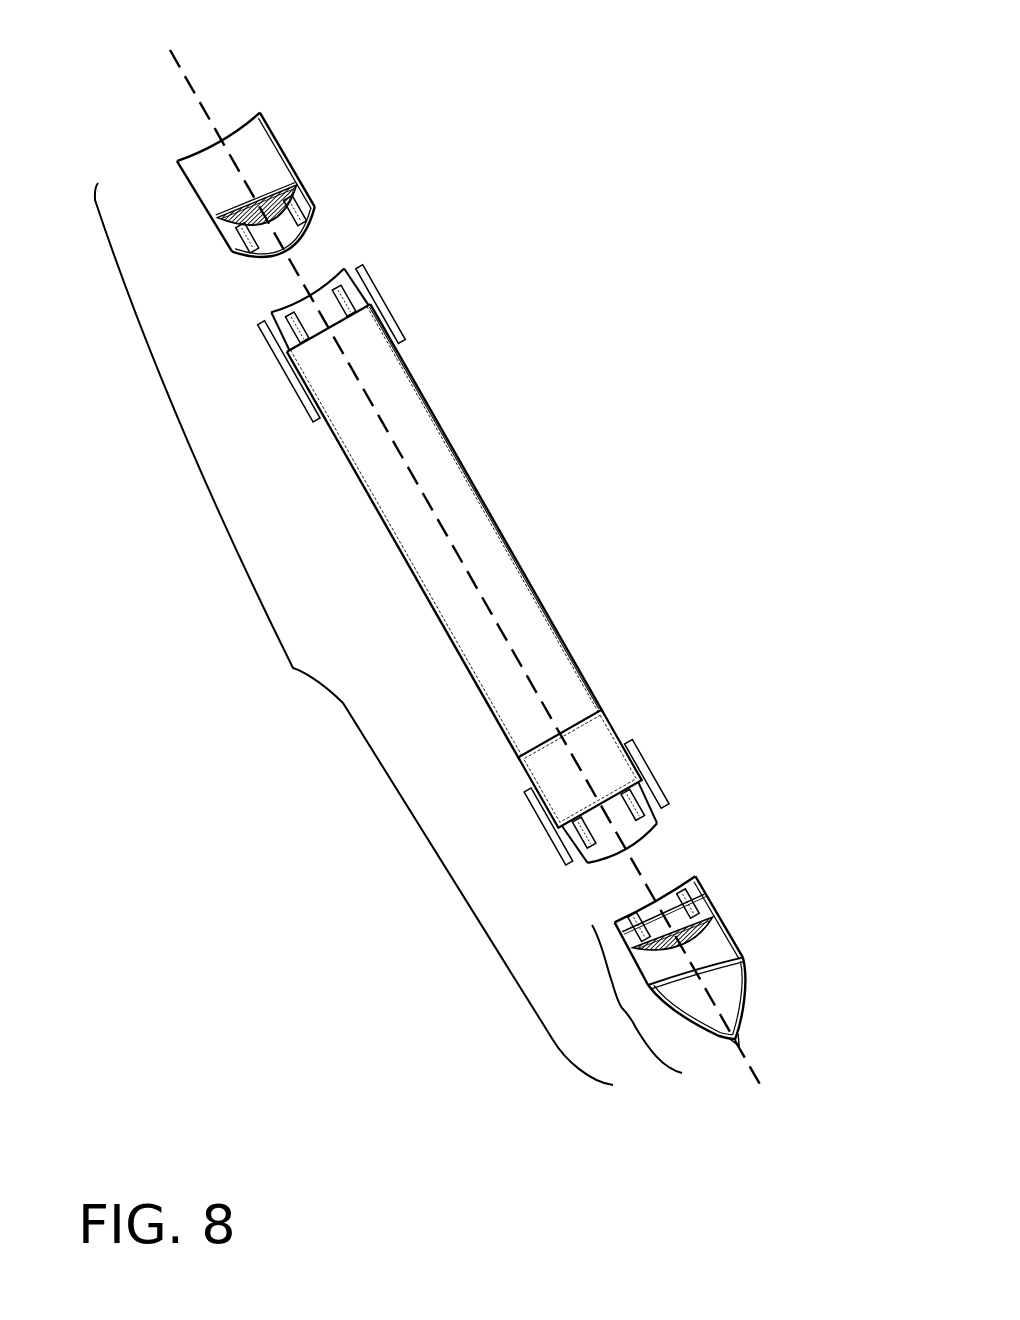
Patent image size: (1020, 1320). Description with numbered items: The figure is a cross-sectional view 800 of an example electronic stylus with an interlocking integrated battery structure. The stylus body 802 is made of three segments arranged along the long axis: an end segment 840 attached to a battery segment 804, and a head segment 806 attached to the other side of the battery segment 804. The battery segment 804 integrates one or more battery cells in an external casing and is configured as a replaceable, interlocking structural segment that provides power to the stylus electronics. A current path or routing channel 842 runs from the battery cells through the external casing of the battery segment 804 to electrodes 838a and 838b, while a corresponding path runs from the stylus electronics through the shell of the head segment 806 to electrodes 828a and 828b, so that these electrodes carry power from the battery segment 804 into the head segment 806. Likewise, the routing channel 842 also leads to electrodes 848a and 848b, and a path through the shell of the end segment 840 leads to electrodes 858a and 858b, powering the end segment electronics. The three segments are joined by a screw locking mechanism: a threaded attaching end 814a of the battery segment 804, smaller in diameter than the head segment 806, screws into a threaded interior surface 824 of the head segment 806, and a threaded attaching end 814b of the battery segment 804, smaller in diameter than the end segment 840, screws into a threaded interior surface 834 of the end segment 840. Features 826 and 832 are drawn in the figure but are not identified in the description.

The cross-sectional view 800 is at (144, 54).
The stylus body 802 is at (354, 634).
The battery segment 804 is at (463, 465).
The head segment 806 is at (626, 999).
The threaded attaching end 814a is at (705, 840).
The threaded attaching end 814b is at (378, 240).
The interior surface 824 is at (643, 767).
The sleeve 826 is at (592, 742).
The electrode 828a is at (702, 887).
The electrode 828b is at (298, 183).
The inner wall 832 is at (382, 377).
The interior surface 834 is at (378, 312).
The electrode 838a is at (638, 790).
The electrode 838b is at (588, 868).
The end segment 840 is at (292, 158).
The routing channel 842 is at (323, 417).
The electrode 848a is at (325, 276).
The electrode 848b is at (287, 320).
The electrode 858a is at (300, 192).
The electrode 858b is at (247, 247).